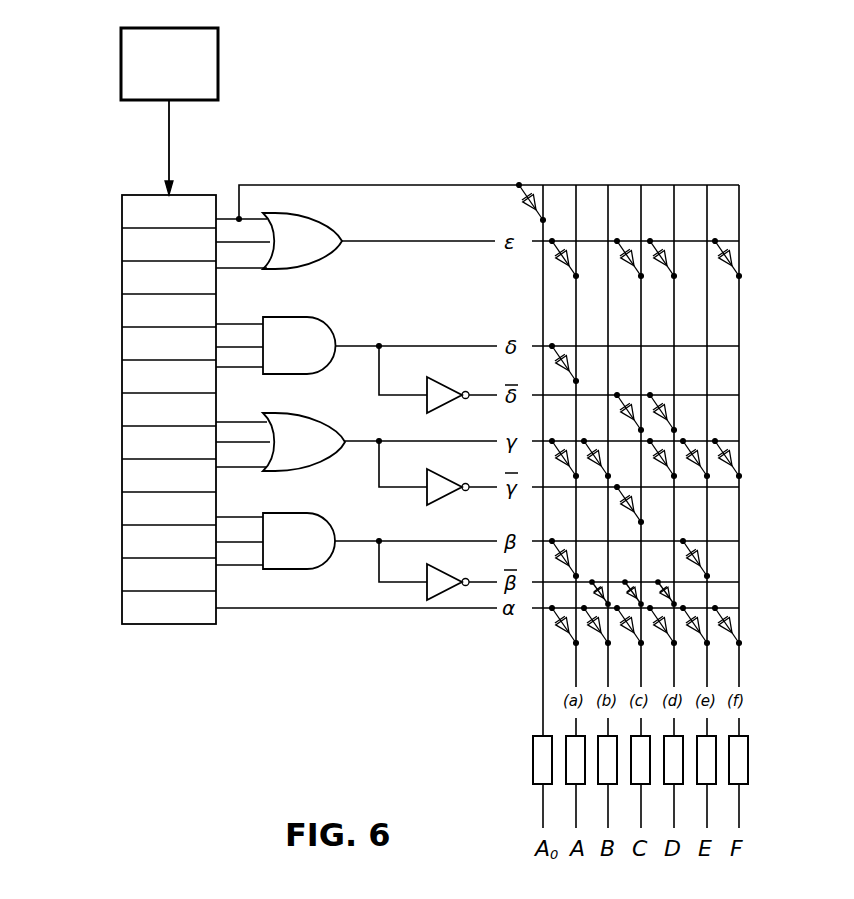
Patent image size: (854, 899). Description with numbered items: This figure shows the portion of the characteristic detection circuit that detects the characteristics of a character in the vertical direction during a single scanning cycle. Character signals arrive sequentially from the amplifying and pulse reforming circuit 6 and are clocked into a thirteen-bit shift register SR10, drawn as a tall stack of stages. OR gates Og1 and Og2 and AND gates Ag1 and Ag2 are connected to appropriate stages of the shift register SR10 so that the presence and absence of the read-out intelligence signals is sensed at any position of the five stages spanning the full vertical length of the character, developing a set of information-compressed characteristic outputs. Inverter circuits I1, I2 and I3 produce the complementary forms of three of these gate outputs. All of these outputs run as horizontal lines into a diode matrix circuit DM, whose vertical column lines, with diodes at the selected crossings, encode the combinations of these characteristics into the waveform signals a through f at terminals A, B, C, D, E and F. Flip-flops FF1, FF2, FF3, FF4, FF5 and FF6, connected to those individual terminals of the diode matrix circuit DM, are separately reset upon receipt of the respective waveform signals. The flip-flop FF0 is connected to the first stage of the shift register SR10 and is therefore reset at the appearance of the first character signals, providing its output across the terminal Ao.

The amplifying and pulse reforming circuit 6 is at (212, 50).
The shift register SR10 is at (127, 451).
The diode matrix circuit DM is at (700, 185).
The OR gate Og1 is at (328, 229).
The AND gate Ag1 is at (322, 331).
The OR gate Og2 is at (330, 428).
The AND gate Ag2 is at (322, 522).
The inverter circuit I1 is at (443, 389).
The inverter circuit I2 is at (443, 481).
The inverter circuit I3 is at (443, 576).
The flip-flop FF0 is at (533, 776).
The flip-flop FF1 is at (566, 784).
The flip-flop FF2 is at (598, 784).
The flip-flop FF3 is at (631, 784).
The flip-flop FF4 is at (664, 784).
The flip-flop FF5 is at (697, 784).
The flip-flop FF6 is at (729, 784).